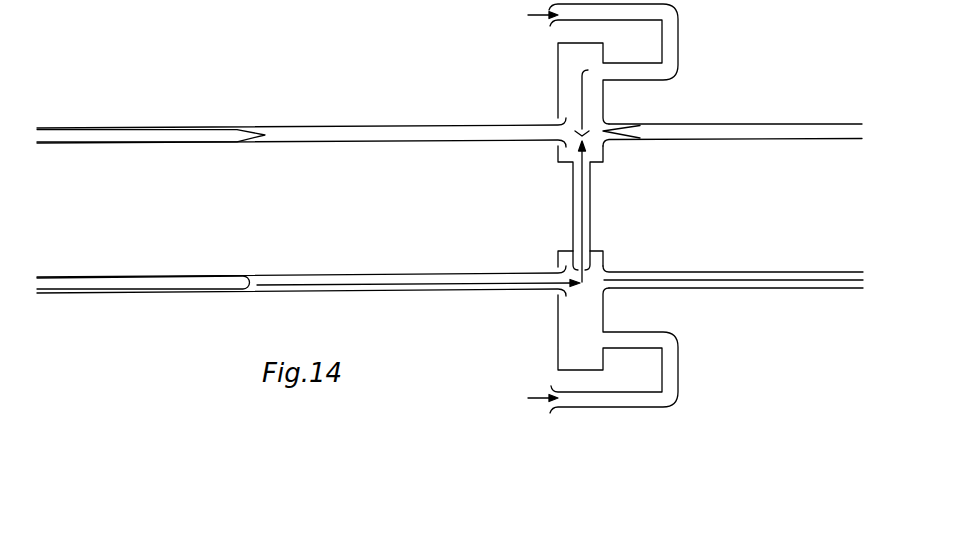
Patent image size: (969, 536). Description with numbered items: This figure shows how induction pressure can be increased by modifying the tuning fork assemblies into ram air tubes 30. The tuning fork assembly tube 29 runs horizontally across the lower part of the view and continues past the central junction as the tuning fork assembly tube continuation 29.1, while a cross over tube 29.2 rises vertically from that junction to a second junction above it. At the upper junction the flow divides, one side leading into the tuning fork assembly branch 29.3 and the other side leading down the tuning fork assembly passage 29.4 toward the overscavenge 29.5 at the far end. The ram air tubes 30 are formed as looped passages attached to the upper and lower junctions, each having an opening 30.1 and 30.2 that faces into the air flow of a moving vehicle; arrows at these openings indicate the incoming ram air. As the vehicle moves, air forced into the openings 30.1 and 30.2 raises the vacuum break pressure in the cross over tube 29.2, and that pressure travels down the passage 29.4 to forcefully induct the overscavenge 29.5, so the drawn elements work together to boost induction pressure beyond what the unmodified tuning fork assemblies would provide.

The tuning fork assembly tube 29 is at (108, 270).
The tuning fork assembly tube continuation 29.1 is at (702, 267).
The cross over tube 29.2 is at (598, 208).
The tuning fork assembly branch 29.3 is at (720, 118).
The tuning fork assembly passage 29.4 is at (400, 122).
The overscavenge 29.5 is at (125, 122).
The ram air tube 30 is at (688, 33).
The ram air tube opening 30.1 is at (563, 62).
The ram air tube opening 30.2 is at (570, 351).